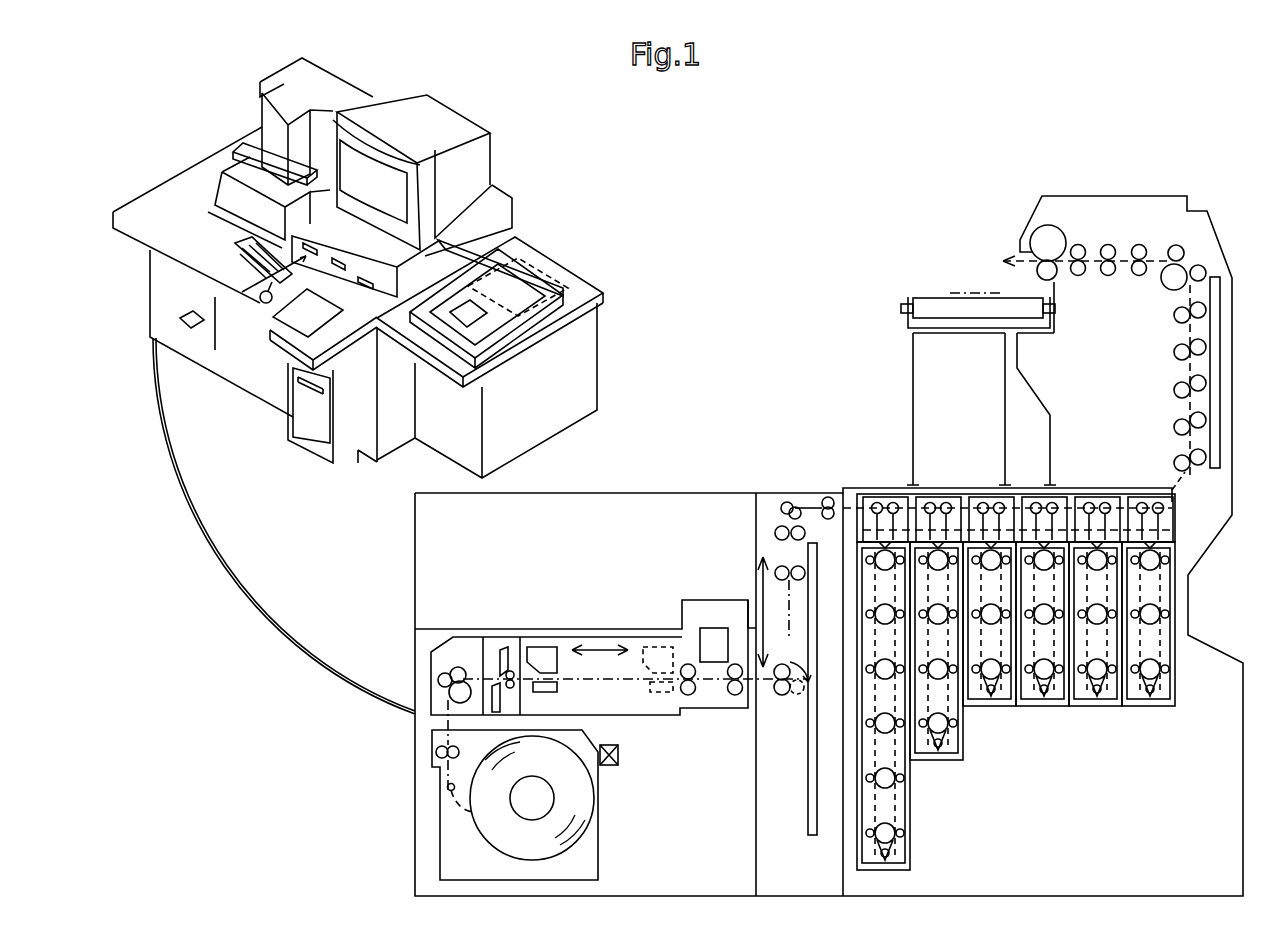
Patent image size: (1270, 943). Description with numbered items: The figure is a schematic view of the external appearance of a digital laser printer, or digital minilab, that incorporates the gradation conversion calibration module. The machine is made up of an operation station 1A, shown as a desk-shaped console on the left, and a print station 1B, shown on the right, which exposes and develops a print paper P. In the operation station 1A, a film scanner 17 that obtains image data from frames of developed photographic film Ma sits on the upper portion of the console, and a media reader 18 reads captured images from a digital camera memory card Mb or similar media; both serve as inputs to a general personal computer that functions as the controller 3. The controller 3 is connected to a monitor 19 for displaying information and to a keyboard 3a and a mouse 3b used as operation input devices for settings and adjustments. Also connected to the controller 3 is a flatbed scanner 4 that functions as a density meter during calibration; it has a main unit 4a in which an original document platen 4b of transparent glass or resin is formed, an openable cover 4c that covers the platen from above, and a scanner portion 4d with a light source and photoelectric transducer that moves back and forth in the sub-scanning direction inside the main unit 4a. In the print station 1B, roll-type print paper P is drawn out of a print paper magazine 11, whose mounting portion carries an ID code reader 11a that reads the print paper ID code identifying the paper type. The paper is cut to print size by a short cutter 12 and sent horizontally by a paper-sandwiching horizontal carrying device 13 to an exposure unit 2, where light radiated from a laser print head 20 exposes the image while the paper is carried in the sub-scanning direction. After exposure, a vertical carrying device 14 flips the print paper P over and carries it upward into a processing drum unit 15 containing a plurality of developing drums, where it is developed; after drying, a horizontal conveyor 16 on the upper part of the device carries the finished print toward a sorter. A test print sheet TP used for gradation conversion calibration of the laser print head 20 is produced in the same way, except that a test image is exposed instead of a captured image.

The operation station 1A is at (514, 141).
The print station 1B is at (790, 278).
The exposure unit 2 is at (717, 688).
The controller 3 is at (330, 475).
The keyboard 3a is at (242, 288).
The mouse 3b is at (266, 303).
The flatbed scanner 4 is at (542, 275).
The main unit 4a is at (520, 330).
The original document platen 4b is at (483, 323).
The openable cover 4c is at (512, 267).
The scanner portion 4d is at (567, 305).
The print paper magazine 11 is at (600, 835).
The ID code reader 11a is at (609, 766).
The short cutter 12 is at (497, 650).
The horizontal carrying device 13 is at (547, 650).
The vertical carrying device 14 is at (786, 700).
The processing drum unit 15 is at (1078, 705).
The horizontal conveyor 16 is at (940, 298).
The film scanner 17 is at (260, 92).
The media reader 18 is at (320, 385).
The monitor 19 is at (400, 106).
The laser print head 20 is at (710, 632).
The photographic film Ma is at (232, 145).
The memory card Mb is at (180, 316).
The print paper P is at (1155, 268).
The test print sheet TP is at (465, 305).